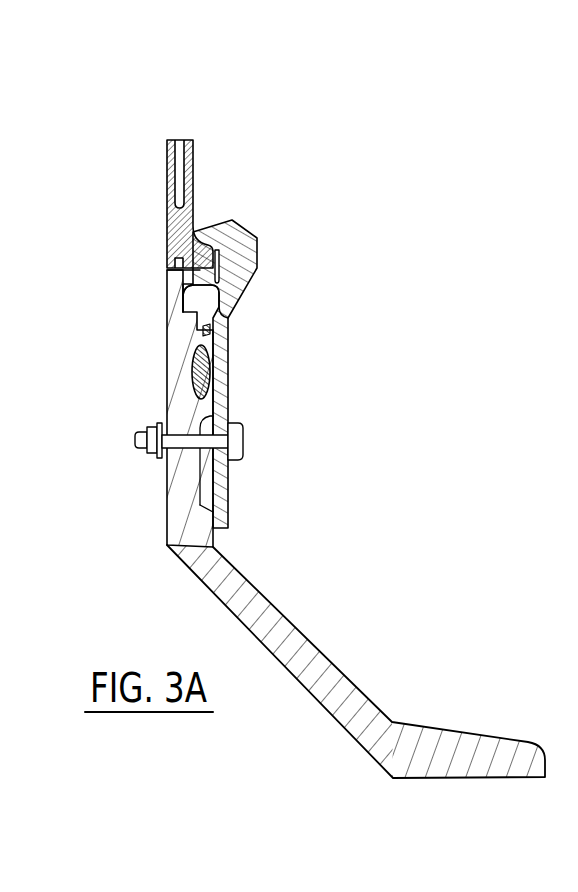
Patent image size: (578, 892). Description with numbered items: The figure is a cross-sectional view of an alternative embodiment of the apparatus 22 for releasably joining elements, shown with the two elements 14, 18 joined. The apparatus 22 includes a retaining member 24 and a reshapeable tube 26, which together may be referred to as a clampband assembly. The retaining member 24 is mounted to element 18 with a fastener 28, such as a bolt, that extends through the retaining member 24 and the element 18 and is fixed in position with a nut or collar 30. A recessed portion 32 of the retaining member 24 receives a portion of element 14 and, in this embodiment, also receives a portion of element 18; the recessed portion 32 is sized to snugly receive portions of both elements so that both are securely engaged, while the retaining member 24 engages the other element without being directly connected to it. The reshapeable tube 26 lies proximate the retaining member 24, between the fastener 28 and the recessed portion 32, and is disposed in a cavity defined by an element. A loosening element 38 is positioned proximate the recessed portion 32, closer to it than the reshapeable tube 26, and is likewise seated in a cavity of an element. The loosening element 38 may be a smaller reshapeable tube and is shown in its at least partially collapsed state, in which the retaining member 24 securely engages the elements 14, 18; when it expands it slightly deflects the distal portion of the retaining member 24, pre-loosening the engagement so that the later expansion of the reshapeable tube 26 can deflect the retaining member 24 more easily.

The element 14 is at (199, 153).
The apparatus for releasably joining elements 22 is at (136, 388).
The retaining member 24 is at (269, 257).
The recessed portion 32 is at (224, 263).
The loosening element 38 is at (197, 330).
The reshapeable tube 26 is at (212, 374).
The nut or collar 30 is at (152, 465).
The fastener 28 is at (260, 443).
The element 18 is at (332, 722).